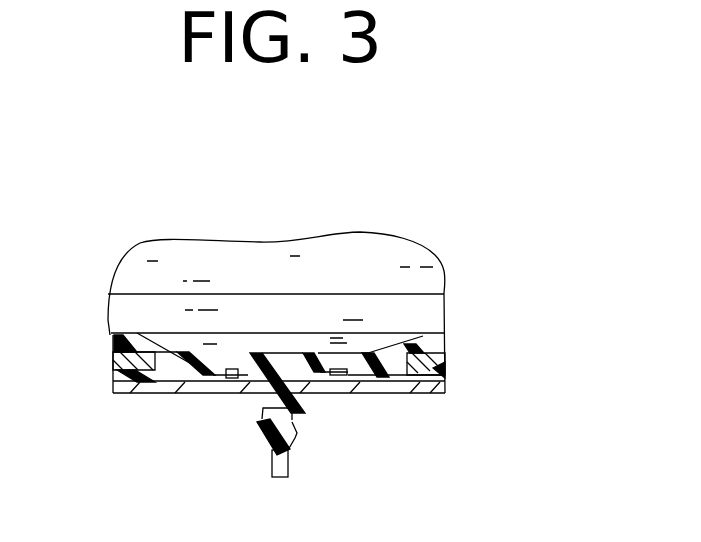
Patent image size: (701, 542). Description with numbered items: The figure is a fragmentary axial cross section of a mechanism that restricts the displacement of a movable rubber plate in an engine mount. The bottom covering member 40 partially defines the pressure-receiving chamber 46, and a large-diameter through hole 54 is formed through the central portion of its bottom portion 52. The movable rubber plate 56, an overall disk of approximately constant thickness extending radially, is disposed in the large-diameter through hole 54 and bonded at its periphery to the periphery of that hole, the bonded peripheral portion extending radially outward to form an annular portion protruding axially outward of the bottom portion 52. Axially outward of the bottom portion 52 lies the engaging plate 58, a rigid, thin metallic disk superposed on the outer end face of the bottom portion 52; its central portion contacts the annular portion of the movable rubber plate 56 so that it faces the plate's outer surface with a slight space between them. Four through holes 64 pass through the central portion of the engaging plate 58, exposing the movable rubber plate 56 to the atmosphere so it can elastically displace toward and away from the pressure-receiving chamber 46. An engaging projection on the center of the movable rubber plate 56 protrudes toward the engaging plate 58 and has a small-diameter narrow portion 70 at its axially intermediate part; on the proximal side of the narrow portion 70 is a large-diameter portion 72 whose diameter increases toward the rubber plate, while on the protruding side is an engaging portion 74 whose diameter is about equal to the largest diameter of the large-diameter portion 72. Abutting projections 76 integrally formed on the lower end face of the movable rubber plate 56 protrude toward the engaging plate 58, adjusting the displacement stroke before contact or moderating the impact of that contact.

The pressure-receiving chamber 46 is at (382, 281).
The bottom portion 52 is at (427, 362).
The bottom covering member 40 is at (497, 364).
The large-diameter through hole 54 is at (157, 353).
The movable rubber plate 56 is at (242, 366).
The engaging plate 58 is at (136, 389).
The through holes 64 is at (200, 392).
The narrow portion 70 is at (268, 392).
The large-diameter portion 72 is at (295, 373).
The engaging portion 74 is at (290, 421).
The abutting projections 76 is at (226, 379).